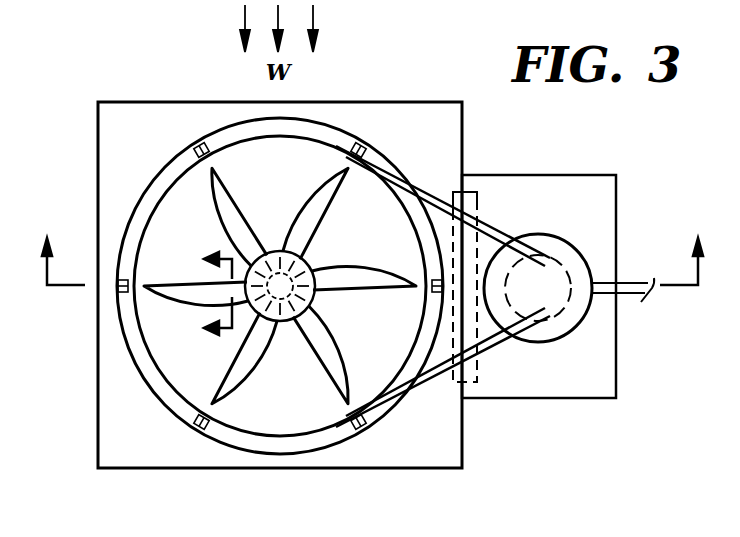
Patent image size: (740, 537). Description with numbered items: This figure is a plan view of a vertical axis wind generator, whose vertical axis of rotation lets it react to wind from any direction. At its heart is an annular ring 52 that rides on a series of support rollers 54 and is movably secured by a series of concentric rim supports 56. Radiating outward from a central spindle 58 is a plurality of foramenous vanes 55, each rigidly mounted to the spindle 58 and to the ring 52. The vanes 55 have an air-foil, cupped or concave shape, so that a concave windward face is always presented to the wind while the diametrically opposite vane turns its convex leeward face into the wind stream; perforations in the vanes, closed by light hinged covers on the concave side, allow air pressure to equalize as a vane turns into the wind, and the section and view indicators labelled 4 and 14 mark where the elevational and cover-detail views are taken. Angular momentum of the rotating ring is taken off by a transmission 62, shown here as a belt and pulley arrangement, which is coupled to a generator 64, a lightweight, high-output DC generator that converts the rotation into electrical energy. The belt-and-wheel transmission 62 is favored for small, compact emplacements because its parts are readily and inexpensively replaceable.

The section line 4- 4 is at (372, 244).
The view direction arrows 14 is at (193, 293).
The annular ring 52 is at (132, 346).
The support rollers 54 is at (198, 145).
The foramenous vanes 55 is at (360, 276).
The concentric rim supports 56 is at (197, 432).
The central spindle 58 is at (275, 250).
The transmission 62 is at (472, 206).
The generator 64 is at (566, 322).